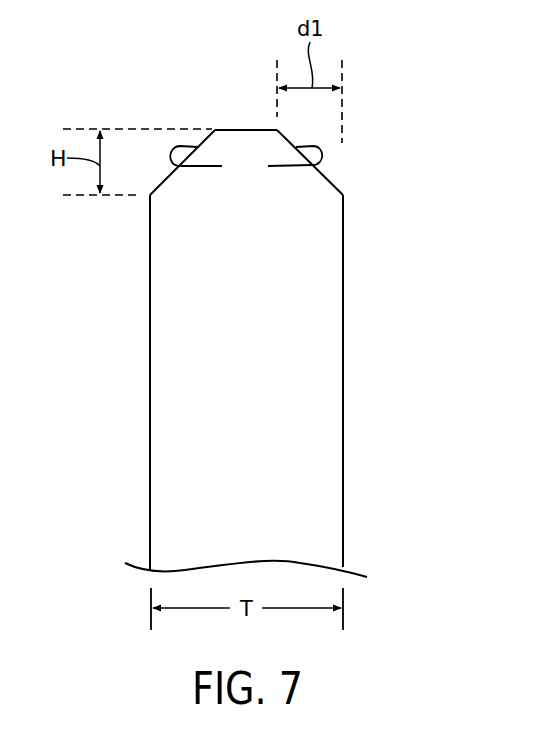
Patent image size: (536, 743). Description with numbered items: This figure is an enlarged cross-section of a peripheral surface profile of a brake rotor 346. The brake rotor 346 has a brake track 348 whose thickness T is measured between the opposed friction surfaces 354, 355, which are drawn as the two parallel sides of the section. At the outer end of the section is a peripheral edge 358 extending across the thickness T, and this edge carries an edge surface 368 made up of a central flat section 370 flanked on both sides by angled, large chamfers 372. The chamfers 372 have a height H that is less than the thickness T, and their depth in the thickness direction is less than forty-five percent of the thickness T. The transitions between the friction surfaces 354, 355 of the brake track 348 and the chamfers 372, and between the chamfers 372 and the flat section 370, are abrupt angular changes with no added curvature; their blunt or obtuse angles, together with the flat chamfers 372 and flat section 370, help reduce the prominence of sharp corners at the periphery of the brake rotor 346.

The brake rotor 346 is at (253, 312).
The brake track 348 is at (139, 421).
The friction surface 354 is at (150, 356).
The friction surface 355 is at (343, 356).
The peripheral edge 358 is at (224, 113).
The edge surface 368 is at (336, 173).
The central flat section 370 is at (259, 129).
The chamfers 372 is at (246, 163).